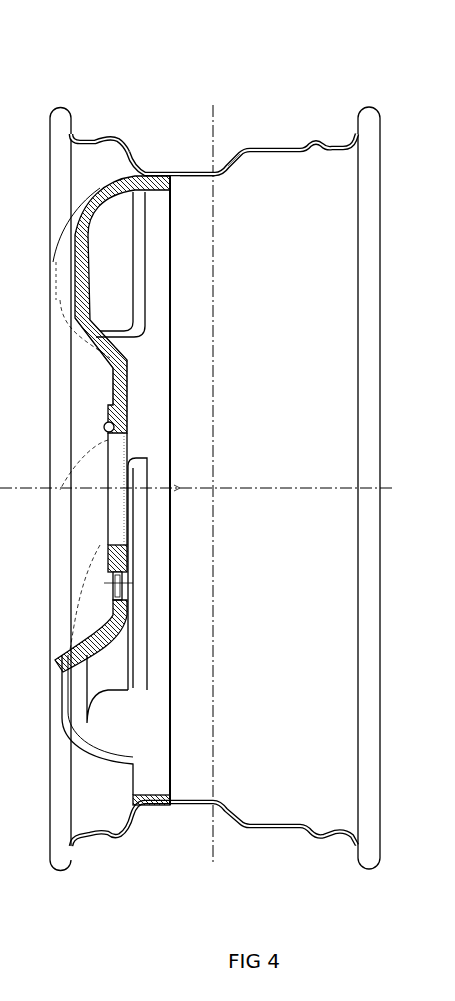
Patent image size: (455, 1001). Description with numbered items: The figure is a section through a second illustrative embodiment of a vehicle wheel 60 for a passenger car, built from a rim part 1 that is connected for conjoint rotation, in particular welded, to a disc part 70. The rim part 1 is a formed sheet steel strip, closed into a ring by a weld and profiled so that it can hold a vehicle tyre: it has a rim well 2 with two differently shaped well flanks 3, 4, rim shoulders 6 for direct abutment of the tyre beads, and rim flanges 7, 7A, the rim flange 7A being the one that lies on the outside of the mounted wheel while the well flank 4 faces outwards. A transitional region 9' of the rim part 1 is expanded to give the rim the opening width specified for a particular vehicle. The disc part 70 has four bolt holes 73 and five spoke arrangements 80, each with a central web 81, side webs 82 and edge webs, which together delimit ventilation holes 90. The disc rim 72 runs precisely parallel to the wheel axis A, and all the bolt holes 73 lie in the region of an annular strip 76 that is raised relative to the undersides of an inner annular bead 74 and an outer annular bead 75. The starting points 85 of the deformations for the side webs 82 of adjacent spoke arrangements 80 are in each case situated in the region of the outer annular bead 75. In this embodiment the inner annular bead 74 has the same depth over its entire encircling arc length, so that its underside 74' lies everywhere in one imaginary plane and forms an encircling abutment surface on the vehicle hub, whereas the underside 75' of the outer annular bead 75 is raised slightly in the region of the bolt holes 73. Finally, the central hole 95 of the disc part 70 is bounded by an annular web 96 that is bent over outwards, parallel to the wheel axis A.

The vehicle wheel 60 is at (243, 88).
The rim flange 7 is at (368, 107).
The rim flange 7A is at (55, 108).
The rim shoulder 6 is at (91, 142).
The well flank 4 is at (128, 158).
The rim part 1 is at (180, 150).
The transitional region 9' is at (257, 140).
The well flank 3 is at (236, 161).
The rim well 2 is at (198, 178).
The disc part 70 is at (190, 252).
The spoke arrangement 80 is at (52, 205).
The central web 81 is at (80, 256).
The side web 82 is at (63, 277).
The outer annular bead 75 is at (59, 351).
The underside of the outer annular bead 75' is at (174, 343).
The annular strip 76 is at (118, 380).
The inner annular bead 74 is at (59, 425).
The underside of the inner annular bead 74' is at (189, 424).
The wheel axis A is at (332, 490).
The annular web 96 is at (107, 432).
The central hole 95 is at (118, 498).
The bolt hole 73 is at (122, 583).
The starting point of the deformation 85 is at (121, 612).
The disc rim 72 is at (153, 795).
The ventilation hole 90 is at (90, 757).